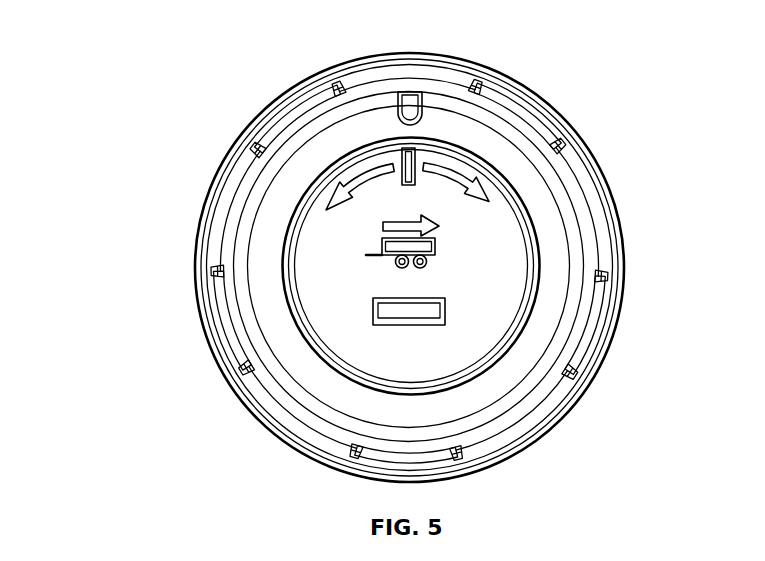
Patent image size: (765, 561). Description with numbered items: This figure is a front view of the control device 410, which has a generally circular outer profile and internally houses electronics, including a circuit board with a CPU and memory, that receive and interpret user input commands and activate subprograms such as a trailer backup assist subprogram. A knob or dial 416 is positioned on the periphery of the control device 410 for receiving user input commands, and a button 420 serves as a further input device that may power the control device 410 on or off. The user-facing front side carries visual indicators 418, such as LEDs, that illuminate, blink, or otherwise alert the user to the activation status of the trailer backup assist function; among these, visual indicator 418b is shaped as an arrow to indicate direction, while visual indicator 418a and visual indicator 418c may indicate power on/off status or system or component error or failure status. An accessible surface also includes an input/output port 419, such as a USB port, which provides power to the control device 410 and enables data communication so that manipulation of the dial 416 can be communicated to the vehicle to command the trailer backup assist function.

The control device 410 is at (140, 53).
The knob or dial 416 is at (585, 175).
The visual indicators 418 is at (345, 168).
The visual indicator 418a is at (398, 165).
The visual indicator 418b is at (335, 152).
The visual indicator 418c is at (373, 257).
The input/output port 419 is at (408, 327).
The button 420 is at (331, 271).